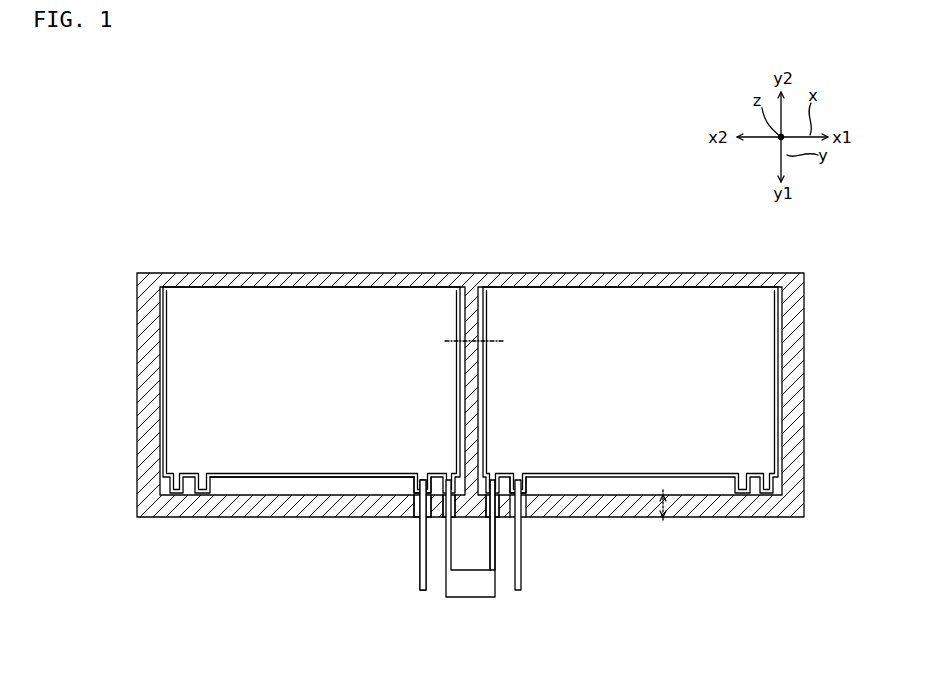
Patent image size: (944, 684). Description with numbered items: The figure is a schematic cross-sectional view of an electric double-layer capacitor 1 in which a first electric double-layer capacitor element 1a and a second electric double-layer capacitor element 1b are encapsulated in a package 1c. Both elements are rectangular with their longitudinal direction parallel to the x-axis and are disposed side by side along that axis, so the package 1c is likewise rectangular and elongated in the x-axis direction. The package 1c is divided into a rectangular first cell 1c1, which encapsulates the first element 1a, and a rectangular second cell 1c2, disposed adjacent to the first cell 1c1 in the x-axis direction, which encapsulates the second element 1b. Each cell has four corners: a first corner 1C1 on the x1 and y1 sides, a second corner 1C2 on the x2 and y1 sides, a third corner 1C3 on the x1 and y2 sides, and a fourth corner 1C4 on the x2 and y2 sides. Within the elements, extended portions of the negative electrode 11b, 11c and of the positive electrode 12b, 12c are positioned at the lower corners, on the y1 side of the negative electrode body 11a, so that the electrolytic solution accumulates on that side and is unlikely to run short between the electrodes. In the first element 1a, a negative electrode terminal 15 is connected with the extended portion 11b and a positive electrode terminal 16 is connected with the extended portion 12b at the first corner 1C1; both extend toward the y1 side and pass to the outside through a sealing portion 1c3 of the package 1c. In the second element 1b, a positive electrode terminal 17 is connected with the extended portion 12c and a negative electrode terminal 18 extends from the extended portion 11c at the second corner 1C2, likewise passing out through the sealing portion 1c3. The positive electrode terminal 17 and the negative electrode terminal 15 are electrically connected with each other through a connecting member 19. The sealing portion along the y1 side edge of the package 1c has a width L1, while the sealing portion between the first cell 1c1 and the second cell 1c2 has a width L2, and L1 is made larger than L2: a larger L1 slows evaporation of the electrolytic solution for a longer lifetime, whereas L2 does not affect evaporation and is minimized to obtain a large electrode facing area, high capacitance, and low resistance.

The electric double-layer capacitor 1 is at (617, 243).
The first electric double-layer capacitor element 1a is at (335, 284).
The second electric double-layer capacitor element 1b is at (523, 287).
The package 1c is at (782, 517).
The first corner 1C1 is at (443, 478).
The second corner 1C2 is at (165, 495).
The third corner 1C3 is at (467, 285).
The fourth corner 1C4 is at (163, 273).
The first cell 1c1 is at (227, 287).
The second cell 1c2 is at (714, 288).
The sealing portion 1c3 is at (445, 558).
The negative electrode body 11a is at (283, 297).
The extended portion of the negative electrode 11b is at (412, 497).
The extended portion of the negative electrode 11c is at (210, 500).
The extended portion of the positive electrode 12b is at (417, 505).
The extended portion of the positive electrode 12c is at (540, 497).
The negative electrode terminal 15 is at (420, 576).
The positive electrode terminal 16 is at (421, 568).
The positive electrode terminal 17 is at (497, 553).
The negative electrode terminal 18 is at (523, 543).
The connecting member 19 is at (462, 598).
The width of the sealing portion along the y1 side edge L1 is at (672, 505).
The width of the sealing portion between the cells L2 is at (472, 335).